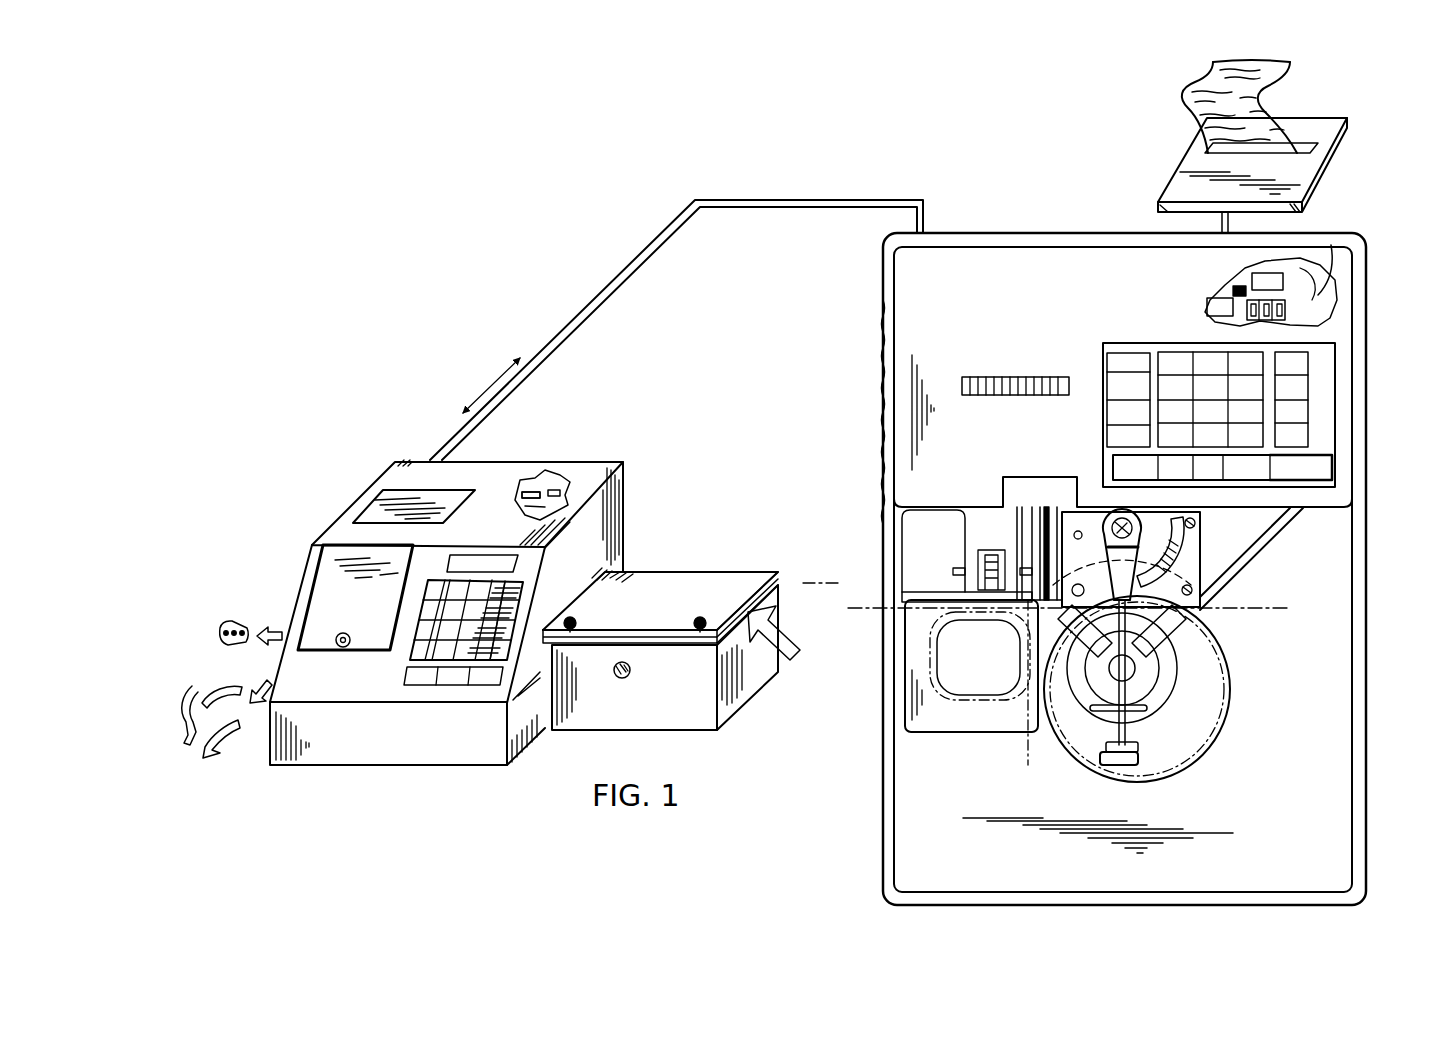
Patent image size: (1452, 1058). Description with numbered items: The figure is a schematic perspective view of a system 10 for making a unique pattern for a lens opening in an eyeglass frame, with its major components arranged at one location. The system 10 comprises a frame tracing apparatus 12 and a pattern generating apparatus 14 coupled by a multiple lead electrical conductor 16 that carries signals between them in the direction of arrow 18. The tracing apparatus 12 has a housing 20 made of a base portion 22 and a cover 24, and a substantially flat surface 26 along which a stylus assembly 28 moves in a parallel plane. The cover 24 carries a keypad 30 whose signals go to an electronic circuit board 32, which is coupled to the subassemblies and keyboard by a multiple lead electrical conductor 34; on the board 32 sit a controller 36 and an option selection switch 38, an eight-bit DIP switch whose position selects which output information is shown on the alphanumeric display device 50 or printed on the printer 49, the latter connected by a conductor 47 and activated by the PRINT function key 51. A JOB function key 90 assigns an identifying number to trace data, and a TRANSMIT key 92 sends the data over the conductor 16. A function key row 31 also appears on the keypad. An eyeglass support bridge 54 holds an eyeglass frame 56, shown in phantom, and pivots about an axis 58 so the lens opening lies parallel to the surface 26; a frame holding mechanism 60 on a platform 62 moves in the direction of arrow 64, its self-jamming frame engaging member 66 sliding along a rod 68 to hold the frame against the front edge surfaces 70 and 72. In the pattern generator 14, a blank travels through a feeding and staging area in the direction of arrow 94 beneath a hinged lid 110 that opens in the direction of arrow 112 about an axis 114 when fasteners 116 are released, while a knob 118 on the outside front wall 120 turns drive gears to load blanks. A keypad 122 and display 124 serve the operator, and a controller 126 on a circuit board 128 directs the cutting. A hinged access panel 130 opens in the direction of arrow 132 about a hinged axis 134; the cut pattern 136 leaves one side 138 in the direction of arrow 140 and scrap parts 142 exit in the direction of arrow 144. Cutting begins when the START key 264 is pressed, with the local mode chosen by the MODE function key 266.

The system 10 is at (824, 178).
The frame tracing apparatus 12 is at (1070, 222).
The pattern generating apparatus 14 is at (497, 282).
The multiple lead electrical conductor 16 is at (785, 209).
The arrow 18 is at (493, 388).
The housing 20 is at (882, 280).
The base portion 22 is at (1360, 636).
The cover 24 is at (1340, 357).
The flat surface 26 is at (1282, 734).
The stylus assembly 28 is at (1225, 627).
The keypad 30 is at (1153, 342).
The function key row 31 is at (1257, 482).
The electronic circuit board 32 is at (1268, 268).
The multiple lead electrical conductor 34 is at (1324, 293).
The controller 36 is at (1257, 281).
The option selection switch 38 is at (1287, 318).
The multiple lead conductor 47 is at (1229, 226).
The printer 49 is at (1300, 128).
The alphanumeric display device 50 is at (995, 377).
The PRINT function key 51 is at (1308, 439).
The eyeglass support bridge 54 is at (932, 733).
The eyeglass frame 56 is at (1170, 664).
The axis 58 is at (1028, 750).
The eyeglass frame holding mechanism 60 is at (1135, 729).
The platform 62 is at (1205, 560).
The arrow 64 is at (1182, 777).
The self-jamming frame engaging member 66 is at (1147, 709).
The rod 68 is at (1113, 737).
The front edge surface 70 is at (967, 656).
The front edge surface 72 is at (1181, 620).
The JOB function key 90 is at (1310, 388).
The TRANSMIT key 92 is at (1283, 479).
The arrow 94 is at (795, 640).
The hinged lid 110 is at (728, 581).
The arrow 112 is at (657, 585).
The axis 114 is at (795, 583).
The fasteners 116 is at (575, 620).
The knob 118 is at (631, 666).
The outside front wall 120 is at (658, 719).
The keypad 122 is at (531, 575).
The display 124 is at (477, 554).
The controller 126 is at (533, 490).
The circuit board 128 is at (565, 483).
The hinged access panel 130 is at (380, 624).
The arrow 132 is at (351, 484).
The hinged axis 134 is at (473, 491).
The pattern 136 is at (223, 619).
The side 138 is at (293, 605).
The arrow 140 is at (268, 624).
The scrap parts 142 is at (223, 714).
The arrow 144 is at (255, 680).
The START key 264 is at (411, 688).
The MODE function key 266 is at (503, 647).